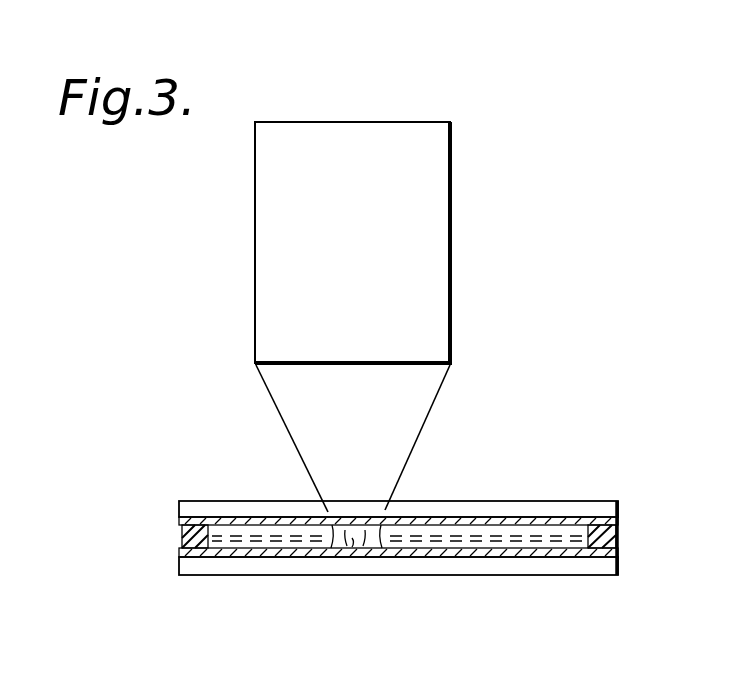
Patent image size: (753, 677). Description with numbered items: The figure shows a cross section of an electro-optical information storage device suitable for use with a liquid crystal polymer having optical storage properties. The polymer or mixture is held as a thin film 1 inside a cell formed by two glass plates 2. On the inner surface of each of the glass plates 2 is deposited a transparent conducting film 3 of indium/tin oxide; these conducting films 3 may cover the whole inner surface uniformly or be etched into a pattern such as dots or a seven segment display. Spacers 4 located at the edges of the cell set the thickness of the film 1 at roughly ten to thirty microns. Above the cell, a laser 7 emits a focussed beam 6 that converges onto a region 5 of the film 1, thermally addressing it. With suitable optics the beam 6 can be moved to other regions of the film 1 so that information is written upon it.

The thin film 1 is at (525, 539).
The glass plates 2 is at (217, 502).
The transparent conducting films 3 is at (620, 517).
The spacers 4 is at (180, 537).
The regions 5 is at (352, 546).
The focussed beam 6 is at (418, 404).
The laser 7 is at (440, 180).